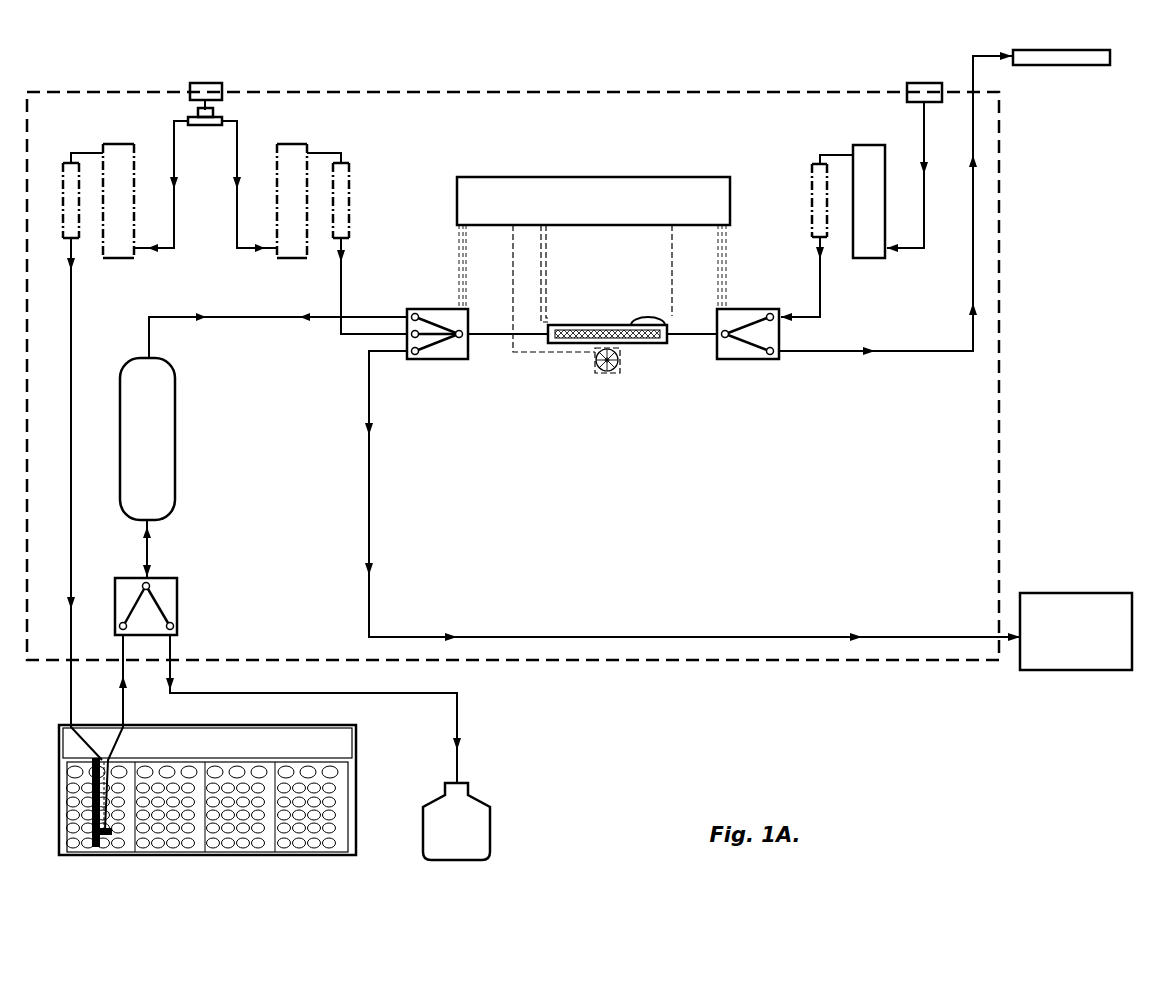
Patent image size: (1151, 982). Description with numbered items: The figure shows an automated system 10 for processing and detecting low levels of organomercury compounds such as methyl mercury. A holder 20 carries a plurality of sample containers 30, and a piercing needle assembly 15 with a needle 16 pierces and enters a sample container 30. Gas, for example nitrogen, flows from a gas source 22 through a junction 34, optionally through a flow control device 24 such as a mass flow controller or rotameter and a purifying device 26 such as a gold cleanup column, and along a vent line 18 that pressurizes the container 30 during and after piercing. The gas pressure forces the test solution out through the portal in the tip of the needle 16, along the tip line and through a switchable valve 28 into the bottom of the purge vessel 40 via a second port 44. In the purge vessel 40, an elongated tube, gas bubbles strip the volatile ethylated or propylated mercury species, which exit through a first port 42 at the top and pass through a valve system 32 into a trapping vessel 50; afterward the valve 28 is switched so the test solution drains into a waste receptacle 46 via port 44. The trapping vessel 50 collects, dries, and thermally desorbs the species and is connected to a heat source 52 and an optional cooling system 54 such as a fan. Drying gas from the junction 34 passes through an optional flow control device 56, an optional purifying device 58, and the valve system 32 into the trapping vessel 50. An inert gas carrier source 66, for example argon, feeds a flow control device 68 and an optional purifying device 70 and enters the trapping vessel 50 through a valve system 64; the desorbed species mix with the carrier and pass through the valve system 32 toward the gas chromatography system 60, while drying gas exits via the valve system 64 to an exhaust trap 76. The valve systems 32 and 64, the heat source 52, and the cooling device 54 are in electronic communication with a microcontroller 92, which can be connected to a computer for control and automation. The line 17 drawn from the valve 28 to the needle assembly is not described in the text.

The automated system 10 is at (993, 702).
The piercing needle assembly 15 is at (86, 798).
The needle 16 is at (107, 840).
The sample line 17 is at (121, 739).
The vent line 18 is at (78, 739).
The holder 20 is at (294, 854).
The gas source 22 is at (188, 98).
The flow control device 24 is at (118, 145).
The purifying device 26 is at (64, 183).
The switchable valve 28 is at (177, 601).
The sample containers 30 is at (162, 812).
The valve system 32 is at (425, 310).
The junction 34 is at (218, 116).
The purge vessel 40 is at (172, 443).
The first port 42 is at (147, 358).
The second port 44 is at (142, 520).
The waste receptacle 46 is at (478, 803).
The trapping vessel 50 is at (600, 325).
The heat source 52 is at (652, 313).
The cooling system 54 is at (577, 367).
The flow control device 56 is at (287, 142).
The purifying device 58 is at (349, 181).
The gas chromatography system 60 is at (1080, 593).
The valve system 64 is at (768, 359).
The inert gas carrier source 66 is at (921, 82).
The flow control device 68 is at (870, 145).
The purifying device 70 is at (812, 185).
The exhaust trap 76 is at (1105, 66).
The microcontroller 92 is at (530, 177).